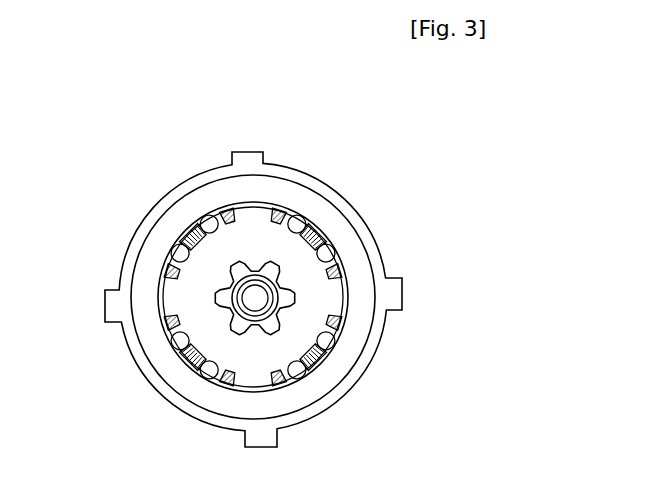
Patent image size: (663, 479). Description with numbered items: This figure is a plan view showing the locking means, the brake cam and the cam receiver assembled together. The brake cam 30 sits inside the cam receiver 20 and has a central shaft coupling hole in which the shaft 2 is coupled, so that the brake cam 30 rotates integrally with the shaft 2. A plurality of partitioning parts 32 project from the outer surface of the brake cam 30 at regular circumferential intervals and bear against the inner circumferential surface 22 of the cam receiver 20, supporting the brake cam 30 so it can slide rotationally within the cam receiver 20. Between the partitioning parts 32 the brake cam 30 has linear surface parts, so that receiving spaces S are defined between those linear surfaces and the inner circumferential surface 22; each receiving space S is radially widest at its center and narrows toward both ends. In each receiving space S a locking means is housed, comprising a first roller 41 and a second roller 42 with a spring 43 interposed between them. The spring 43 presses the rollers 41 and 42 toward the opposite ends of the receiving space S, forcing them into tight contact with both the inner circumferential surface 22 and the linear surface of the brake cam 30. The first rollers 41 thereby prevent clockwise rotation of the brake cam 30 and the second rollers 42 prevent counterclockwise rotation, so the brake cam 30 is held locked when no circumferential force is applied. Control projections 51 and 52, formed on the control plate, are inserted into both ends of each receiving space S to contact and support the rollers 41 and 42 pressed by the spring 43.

The shaft 2 is at (258, 300).
The cam receiver 20 is at (157, 200).
The inner circumferential surface 22 is at (208, 207).
The brake cam 30 is at (222, 343).
The partitioning parts 32 is at (343, 294).
The first roller 41 is at (373, 180).
The second roller 42 is at (334, 246).
The spring 43 is at (326, 251).
The control projection 51 is at (296, 224).
The control projection 52 is at (342, 266).
The receiving space S is at (273, 205).